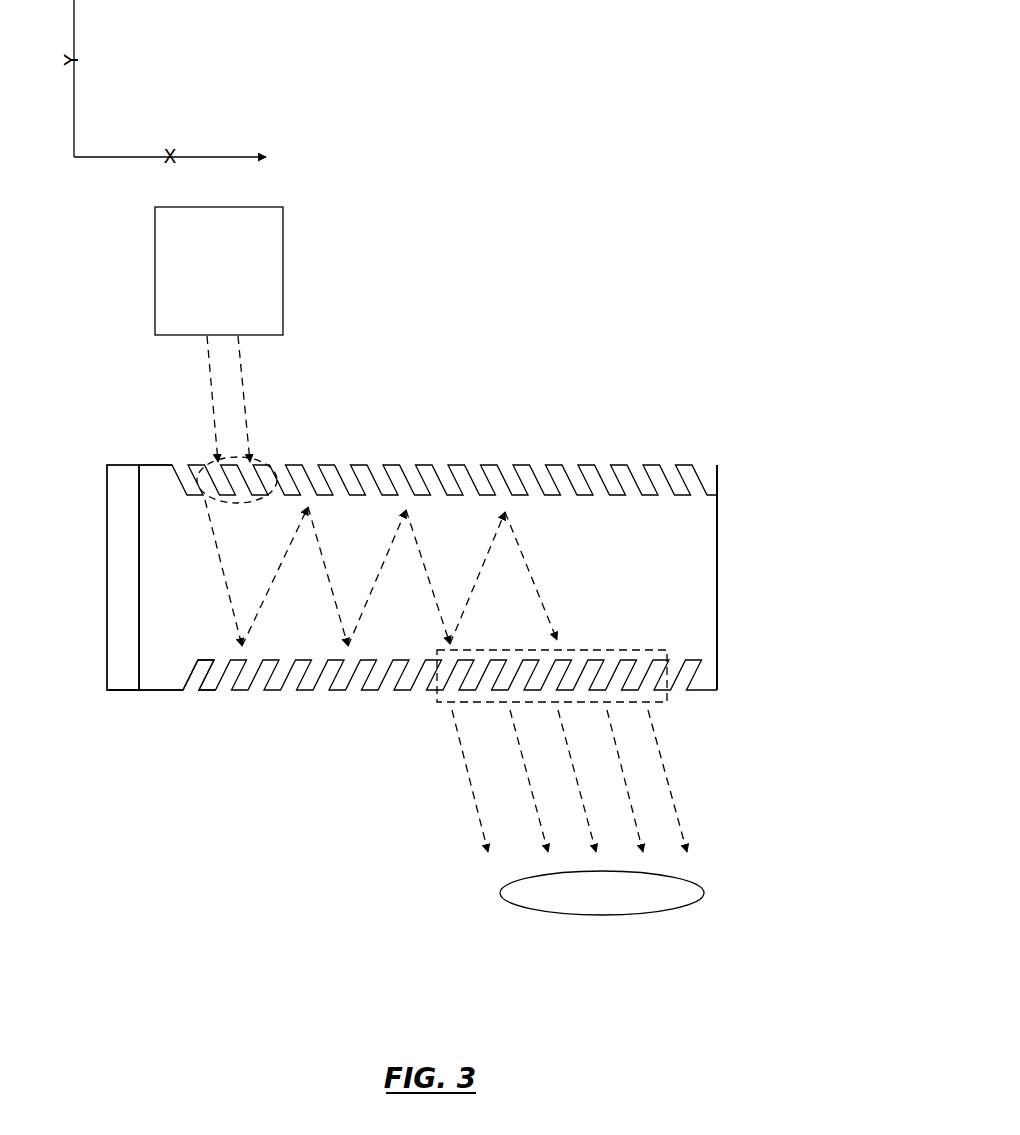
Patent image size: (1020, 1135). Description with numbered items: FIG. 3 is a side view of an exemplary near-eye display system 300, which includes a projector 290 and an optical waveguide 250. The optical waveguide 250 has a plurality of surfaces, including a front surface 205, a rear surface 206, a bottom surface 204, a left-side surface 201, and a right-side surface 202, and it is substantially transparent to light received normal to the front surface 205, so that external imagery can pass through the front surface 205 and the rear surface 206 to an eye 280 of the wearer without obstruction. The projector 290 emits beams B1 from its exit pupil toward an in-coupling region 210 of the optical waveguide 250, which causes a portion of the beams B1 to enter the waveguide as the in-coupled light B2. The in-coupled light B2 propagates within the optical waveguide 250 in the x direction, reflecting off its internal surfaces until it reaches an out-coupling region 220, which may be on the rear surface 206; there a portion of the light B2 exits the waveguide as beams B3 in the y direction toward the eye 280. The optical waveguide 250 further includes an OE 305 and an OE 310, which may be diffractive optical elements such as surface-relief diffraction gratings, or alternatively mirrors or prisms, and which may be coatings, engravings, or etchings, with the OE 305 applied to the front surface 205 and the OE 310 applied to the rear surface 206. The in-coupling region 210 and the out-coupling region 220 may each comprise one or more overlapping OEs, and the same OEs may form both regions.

The projector 290 is at (219, 271).
The waveguide display system 300 is at (410, 992).
The left-side surface 201 is at (107, 610).
The front surface 205 is at (148, 465).
The OE 305 is at (632, 462).
The OE 310 is at (297, 700).
The rear surface 206 is at (163, 690).
The optical waveguide 250 is at (204, 699).
The right-side surface 202 is at (718, 572).
The bottom surface 204 is at (697, 573).
The in-coupling region 210 is at (265, 465).
The out-coupling region 220 is at (670, 713).
The eye 280 is at (602, 893).
The beams B1 is at (208, 433).
The in-coupled light B2 is at (218, 568).
The beams B3 is at (703, 818).